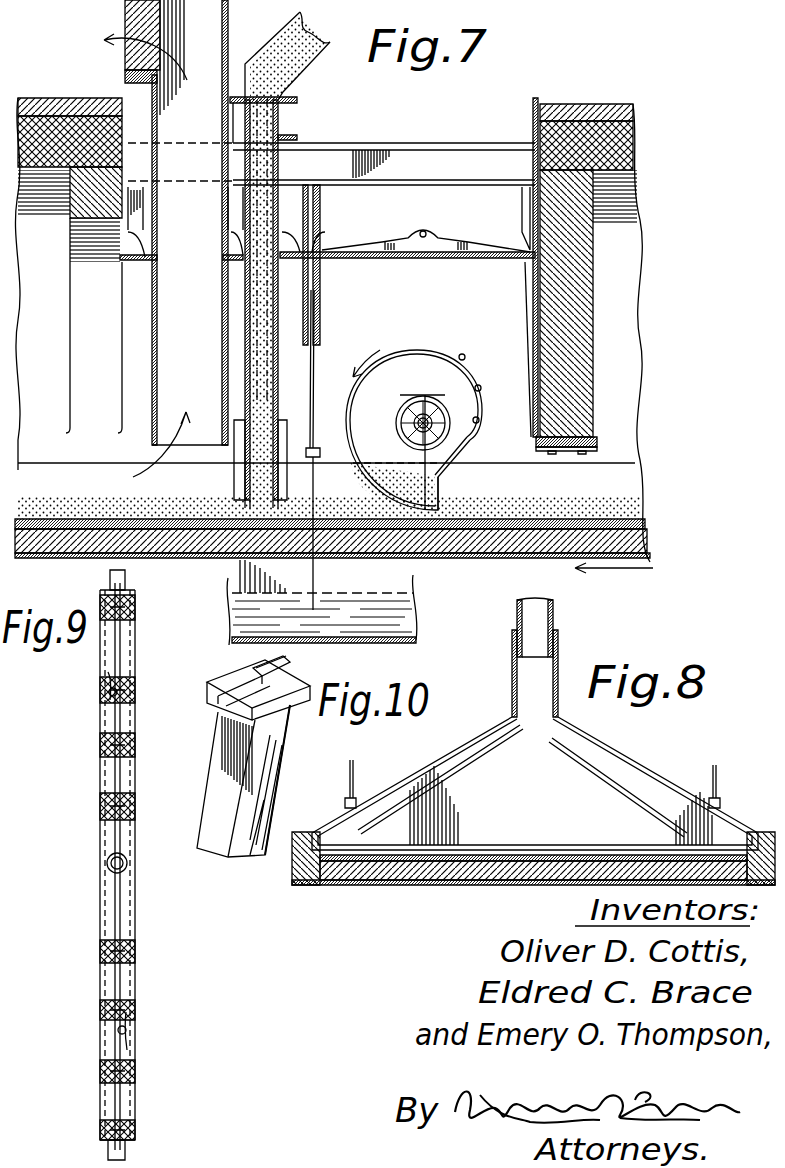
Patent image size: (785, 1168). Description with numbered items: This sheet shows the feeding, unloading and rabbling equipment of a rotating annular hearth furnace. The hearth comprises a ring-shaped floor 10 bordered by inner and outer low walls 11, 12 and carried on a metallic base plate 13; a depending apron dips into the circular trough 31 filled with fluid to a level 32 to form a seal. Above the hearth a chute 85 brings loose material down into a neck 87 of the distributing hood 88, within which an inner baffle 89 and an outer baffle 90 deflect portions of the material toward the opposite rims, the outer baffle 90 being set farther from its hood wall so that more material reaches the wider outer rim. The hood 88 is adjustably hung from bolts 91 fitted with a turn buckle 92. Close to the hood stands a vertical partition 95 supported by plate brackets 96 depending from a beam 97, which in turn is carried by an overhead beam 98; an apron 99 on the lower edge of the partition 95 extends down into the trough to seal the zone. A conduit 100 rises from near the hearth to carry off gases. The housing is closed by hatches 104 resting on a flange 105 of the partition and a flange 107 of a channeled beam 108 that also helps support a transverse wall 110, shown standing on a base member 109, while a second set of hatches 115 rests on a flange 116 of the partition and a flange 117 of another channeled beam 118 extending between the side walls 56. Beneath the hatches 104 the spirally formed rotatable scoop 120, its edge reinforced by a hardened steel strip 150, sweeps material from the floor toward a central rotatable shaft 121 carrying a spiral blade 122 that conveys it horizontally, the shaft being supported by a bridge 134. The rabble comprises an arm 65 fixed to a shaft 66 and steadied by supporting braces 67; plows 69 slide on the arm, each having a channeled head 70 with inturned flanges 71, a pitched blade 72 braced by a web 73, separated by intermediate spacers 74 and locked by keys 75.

In FIG. 7, the ring-shaped floor 10 is at (632, 529).
In FIG. 8, the ring-shaped floor 10 is at (523, 856).
In FIG. 8, the inner low wall 11 is at (310, 826).
In FIG. 7, the outer low wall 12 is at (608, 465).
In FIG. 8, the outer low wall 12 is at (769, 828).
In FIG. 7, the metallic base plate 13 is at (487, 557).
In FIG. 8, the metallic base plate 13 is at (418, 885).
In FIG. 7, the outer circular trough 31 is at (368, 644).
In FIG. 7, the fluid level 32 is at (412, 592).
In FIG. 7, the furnace wall 56 is at (50, 97).
In FIG. 9, the rabble arm 65 is at (119, 923).
In FIG. 9, the shaft 66 is at (130, 870).
In FIG. 9, the supporting braces 67 is at (108, 694).
In FIG. 10, the plows 69 is at (217, 747).
In FIG. 10, the channeled head 70 is at (206, 693).
In FIG. 9, the inturned flanges 71 is at (127, 627).
In FIG. 10, the inturned flanges 71 is at (274, 672).
In FIG. 9, the blade 72 is at (133, 633).
In FIG. 10, the blade 72 is at (267, 780).
In FIG. 10, the web 73 is at (253, 751).
In FIG. 9, the intermediate spacers 74 is at (100, 657).
In FIG. 9, the keys 75 is at (122, 582).
In FIG. 7, the chute 85 is at (268, 165).
In FIG. 8, the chute 85 is at (514, 614).
In FIG. 7, the neck 87 is at (282, 152).
In FIG. 8, the neck 87 is at (511, 680).
In FIG. 7, the distributing hood 88 is at (277, 338).
In FIG. 8, the distributing hood 88 is at (638, 760).
In FIG. 8, the inner baffle 89 is at (463, 765).
In FIG. 8, the outer baffle 90 is at (613, 787).
In FIG. 7, the bolts 91 is at (260, 354).
In FIG. 8, the bolts 91 is at (352, 788).
In FIG. 7, the turn buckle 92 is at (304, 214).
In FIG. 7, the vertical partition 95 is at (316, 303).
In FIG. 7, the plate brackets 96 is at (318, 223).
In FIG. 7, the beam 97 is at (404, 153).
In FIG. 7, the overhead beam 98 is at (284, 122).
In FIG. 7, the apron 99 is at (314, 495).
In FIG. 7, the conduit 100 is at (205, 30).
In FIG. 7, the hatches 104 is at (478, 251).
In FIG. 7, the flange 105 is at (320, 263).
In FIG. 7, the flange 107 is at (524, 280).
In FIG. 7, the channeled beam 108 is at (535, 315).
In FIG. 7, the base flange 109 is at (598, 436).
In FIG. 7, the transverse wall 110 is at (577, 325).
In FIG. 7, the hatches 115 is at (235, 263).
In FIG. 7, the flange 116 is at (298, 265).
In FIG. 7, the flange 117 is at (122, 265).
In FIG. 7, the channeled beam 118 is at (120, 230).
In FIG. 7, the spirally formed rotatable scoop 120 is at (414, 350).
In FIG. 7, the rotatable shaft 121 is at (432, 424).
In FIG. 7, the spiral blade 122 is at (437, 413).
In FIG. 7, the bridge 134 is at (408, 396).
In FIG. 7, the strip 150 is at (438, 508).